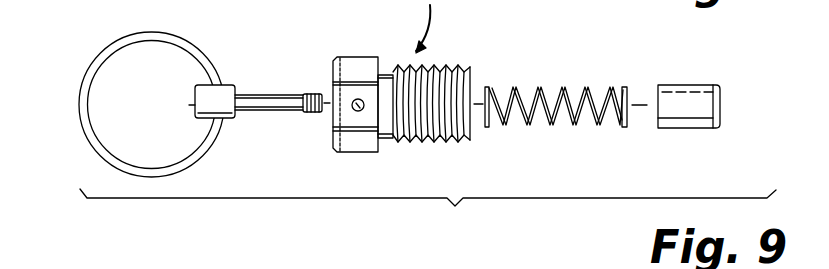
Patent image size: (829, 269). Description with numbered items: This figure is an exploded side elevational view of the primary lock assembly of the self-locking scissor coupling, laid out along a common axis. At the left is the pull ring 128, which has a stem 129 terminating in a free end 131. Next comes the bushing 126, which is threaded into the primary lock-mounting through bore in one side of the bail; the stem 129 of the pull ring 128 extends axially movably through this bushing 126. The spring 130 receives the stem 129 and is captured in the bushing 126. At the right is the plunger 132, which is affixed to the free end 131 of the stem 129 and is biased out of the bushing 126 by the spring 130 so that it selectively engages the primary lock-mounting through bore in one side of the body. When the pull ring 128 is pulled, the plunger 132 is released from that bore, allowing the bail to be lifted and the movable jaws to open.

The bushing 126 is at (361, 62).
The pull ring 128 is at (97, 58).
The stem 129 is at (263, 107).
The spring 130 is at (532, 85).
The free end 131 is at (318, 95).
The plunger 132 is at (688, 118).